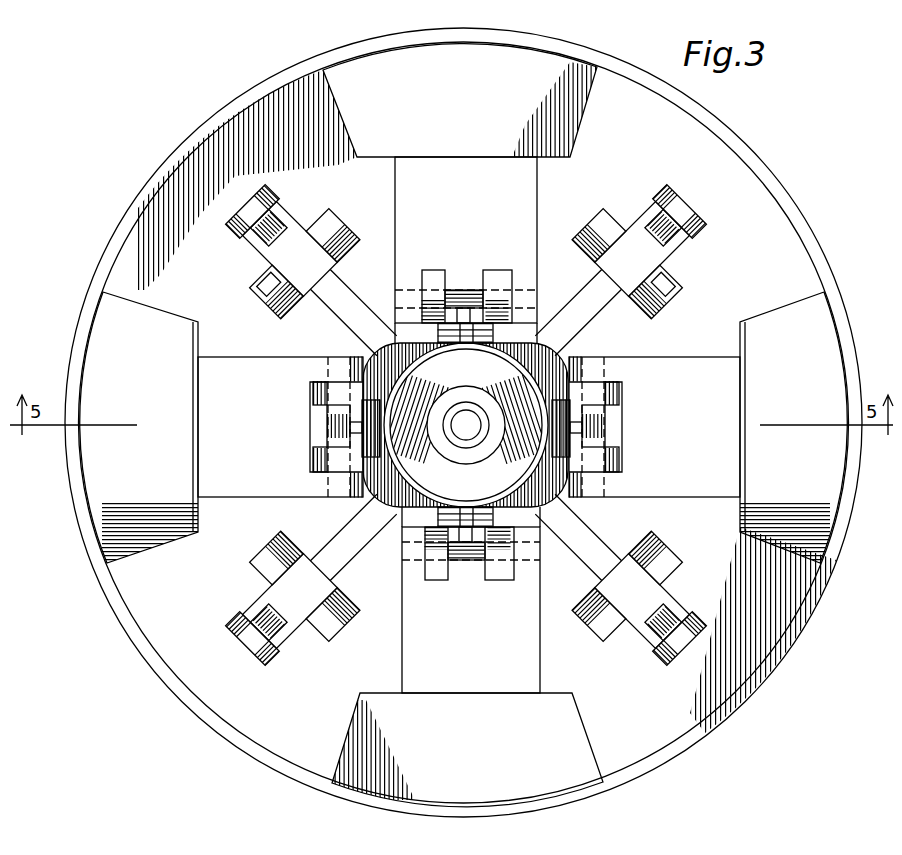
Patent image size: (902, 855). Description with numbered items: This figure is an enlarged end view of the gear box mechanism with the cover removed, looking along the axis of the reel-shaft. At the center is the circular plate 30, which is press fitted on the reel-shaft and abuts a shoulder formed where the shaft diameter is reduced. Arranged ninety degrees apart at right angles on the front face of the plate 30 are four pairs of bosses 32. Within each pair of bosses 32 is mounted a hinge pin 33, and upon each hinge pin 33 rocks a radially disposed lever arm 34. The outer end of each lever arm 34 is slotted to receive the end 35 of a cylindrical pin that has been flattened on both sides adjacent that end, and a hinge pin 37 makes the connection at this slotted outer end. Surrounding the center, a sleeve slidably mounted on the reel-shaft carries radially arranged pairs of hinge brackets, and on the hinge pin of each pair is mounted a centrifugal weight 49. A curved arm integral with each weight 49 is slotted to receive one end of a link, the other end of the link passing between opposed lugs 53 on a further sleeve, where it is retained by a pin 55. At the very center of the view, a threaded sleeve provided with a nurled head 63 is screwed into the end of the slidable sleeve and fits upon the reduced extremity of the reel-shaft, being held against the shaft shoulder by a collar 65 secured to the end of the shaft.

The circular plate 30 is at (784, 252).
The bosses 32 is at (346, 228).
The hinge pin 33 is at (258, 299).
The lever arm 34 is at (343, 292).
The end of cylindrical pin 35 is at (253, 204).
The hinge pin 37 is at (272, 198).
The centrifugal weight 49 is at (823, 340).
The lugs 53 is at (478, 507).
The pin 55 is at (447, 333).
The nurled head 63 is at (498, 402).
The collar 65 is at (451, 443).